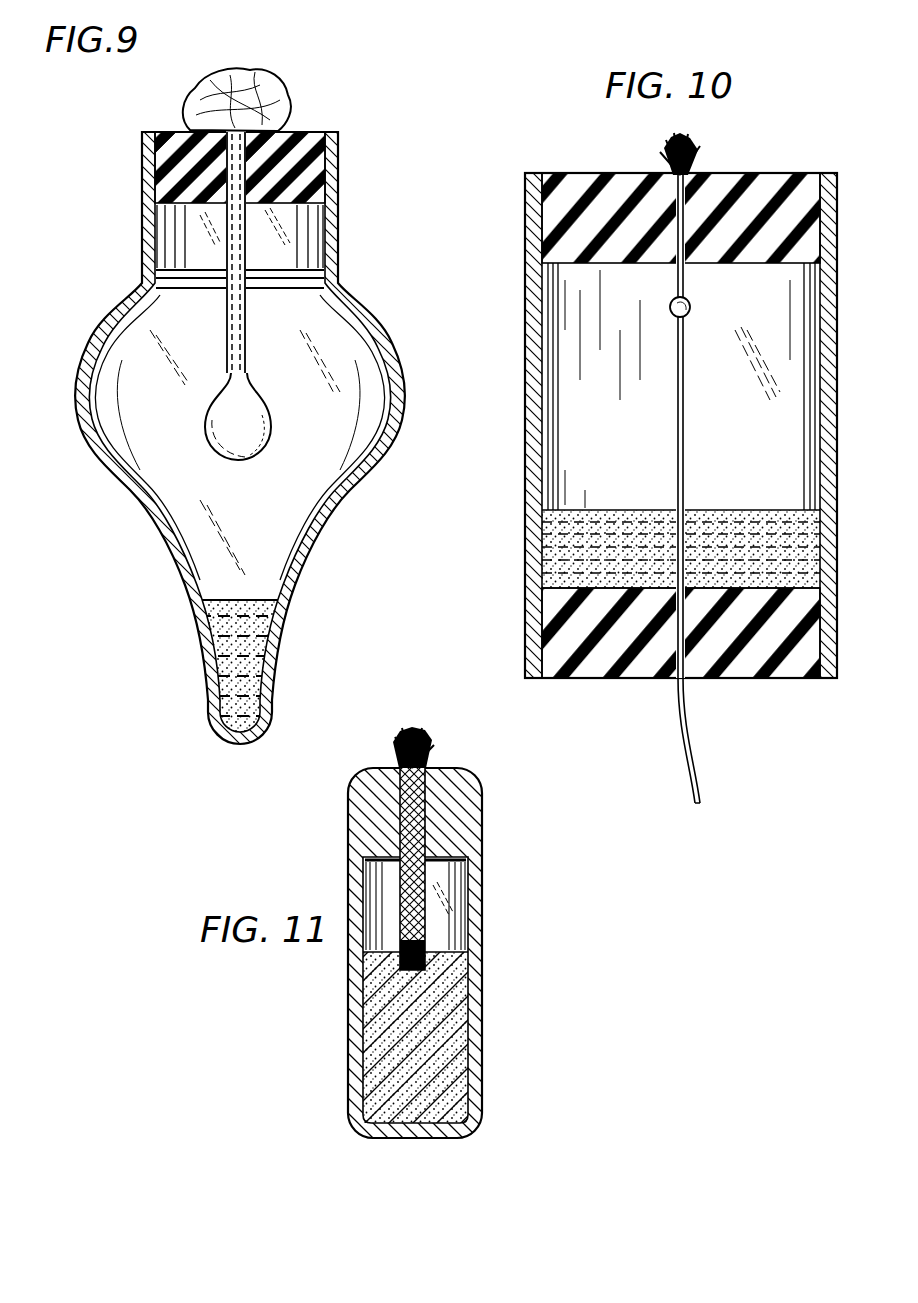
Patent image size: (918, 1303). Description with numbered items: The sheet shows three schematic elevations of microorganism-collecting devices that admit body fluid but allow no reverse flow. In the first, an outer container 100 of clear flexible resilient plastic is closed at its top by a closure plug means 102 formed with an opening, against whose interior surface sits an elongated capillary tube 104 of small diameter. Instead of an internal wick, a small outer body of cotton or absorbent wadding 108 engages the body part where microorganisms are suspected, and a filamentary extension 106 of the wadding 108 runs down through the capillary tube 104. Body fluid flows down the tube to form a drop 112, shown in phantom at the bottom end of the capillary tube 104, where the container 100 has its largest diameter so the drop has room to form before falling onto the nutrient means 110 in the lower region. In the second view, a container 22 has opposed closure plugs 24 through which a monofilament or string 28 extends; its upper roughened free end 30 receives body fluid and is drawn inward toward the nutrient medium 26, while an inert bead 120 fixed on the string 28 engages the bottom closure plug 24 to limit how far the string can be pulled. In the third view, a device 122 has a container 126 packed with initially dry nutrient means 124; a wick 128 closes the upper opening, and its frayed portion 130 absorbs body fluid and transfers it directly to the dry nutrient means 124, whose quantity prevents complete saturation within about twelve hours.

In FIG. 9, the outer container 100 is at (365, 475).
In FIG. 9, the closure plug means 102 is at (306, 163).
In FIG. 9, the elongated capillary tube 104 is at (247, 320).
In FIG. 9, the filamentary extension 106 is at (229, 342).
In FIG. 9, the body of cotton or absorbent wadding 108 is at (283, 107).
In FIG. 9, the nutrient means 110 is at (218, 642).
In FIG. 9, the drop 112 is at (262, 452).
In FIG. 10, the container 22 is at (533, 393).
In FIG. 10, the closure plugs 24 is at (790, 190).
In FIG. 10, the nutrient medium 26 is at (548, 543).
In FIG. 10, the monofilament or string 28 is at (685, 405).
In FIG. 10, the upper roughened free end 30 is at (668, 143).
In FIG. 10, the inert bead 120 is at (690, 302).
In FIG. 11, the device 122 is at (340, 1058).
In FIG. 11, the nutrient means 124 is at (455, 1034).
In FIG. 11, the container 126 is at (484, 845).
In FIG. 11, the wick 128 is at (425, 787).
In FIG. 11, the frayed portion 130 is at (432, 745).